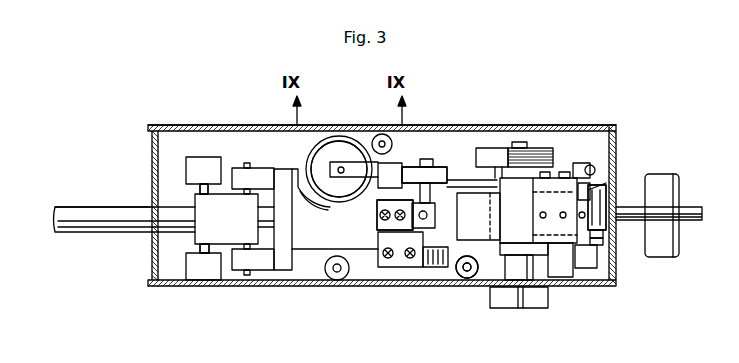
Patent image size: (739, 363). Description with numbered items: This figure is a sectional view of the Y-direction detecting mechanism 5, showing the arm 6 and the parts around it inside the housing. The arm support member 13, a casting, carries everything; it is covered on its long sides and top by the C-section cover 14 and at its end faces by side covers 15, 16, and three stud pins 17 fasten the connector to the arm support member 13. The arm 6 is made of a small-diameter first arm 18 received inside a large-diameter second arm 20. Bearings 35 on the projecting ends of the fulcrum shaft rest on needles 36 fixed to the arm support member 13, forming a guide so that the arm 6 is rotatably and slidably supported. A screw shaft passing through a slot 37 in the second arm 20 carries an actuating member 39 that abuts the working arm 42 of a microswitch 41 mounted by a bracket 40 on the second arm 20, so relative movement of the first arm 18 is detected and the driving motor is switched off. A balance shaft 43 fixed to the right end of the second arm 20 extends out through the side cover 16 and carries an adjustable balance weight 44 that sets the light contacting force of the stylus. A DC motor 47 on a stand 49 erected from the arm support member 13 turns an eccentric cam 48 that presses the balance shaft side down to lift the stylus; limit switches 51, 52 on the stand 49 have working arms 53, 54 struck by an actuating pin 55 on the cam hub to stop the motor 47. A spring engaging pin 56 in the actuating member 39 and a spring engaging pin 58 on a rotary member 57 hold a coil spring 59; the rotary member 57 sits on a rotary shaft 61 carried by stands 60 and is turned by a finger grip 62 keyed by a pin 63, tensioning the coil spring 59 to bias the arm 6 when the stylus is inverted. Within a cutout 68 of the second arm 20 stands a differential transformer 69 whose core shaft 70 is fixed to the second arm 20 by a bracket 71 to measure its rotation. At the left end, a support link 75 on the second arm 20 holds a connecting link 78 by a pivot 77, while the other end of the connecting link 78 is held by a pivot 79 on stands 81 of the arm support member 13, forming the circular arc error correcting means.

The Y-direction detecting mechanism 5 is at (580, 125).
The arm 6 is at (57, 233).
The arm support member 13 is at (262, 135).
The cover 14 is at (380, 134).
The side cover 15 is at (152, 146).
The side cover 16 is at (616, 142).
The stud pins 17 is at (335, 281).
The first arm 18 is at (78, 234).
The second arm 20 is at (305, 237).
The bearings 35 is at (408, 168).
The needles 36 is at (441, 165).
The slot 37 is at (473, 262).
The actuating member 39 is at (441, 233).
The bracket 40 is at (377, 223).
The microswitch 41 is at (378, 243).
The working arm 42 is at (399, 268).
The balance shaft 43 is at (690, 210).
The balance weight 44 is at (670, 228).
The DC motor 47 is at (551, 266).
The eccentric cam 48 is at (607, 201).
The stand 49 is at (565, 262).
The limit switch 51 is at (595, 270).
The limit switch 52 is at (582, 170).
The working arm 53 is at (604, 245).
The working arm 54 is at (606, 186).
The actuating pin 55 is at (604, 237).
The spring engaging pin 56 is at (427, 170).
The rotary member 57 is at (511, 148).
The spring engaging pin 58 is at (495, 148).
The coil spring 59 is at (450, 184).
The stands 60 is at (541, 165).
The rotary shaft 61 is at (525, 185).
The finger grip 62 is at (530, 305).
The pin 63 is at (513, 262).
The cutout 68 is at (335, 192).
The differential transformer 69 is at (323, 152).
The core shaft 70 is at (302, 187).
The bracket 71 is at (352, 164).
The support link 75 is at (261, 264).
The pivot 77 is at (251, 189).
The connecting link 78 is at (200, 235).
The pivot 79 is at (208, 190).
The stands 81 is at (222, 157).